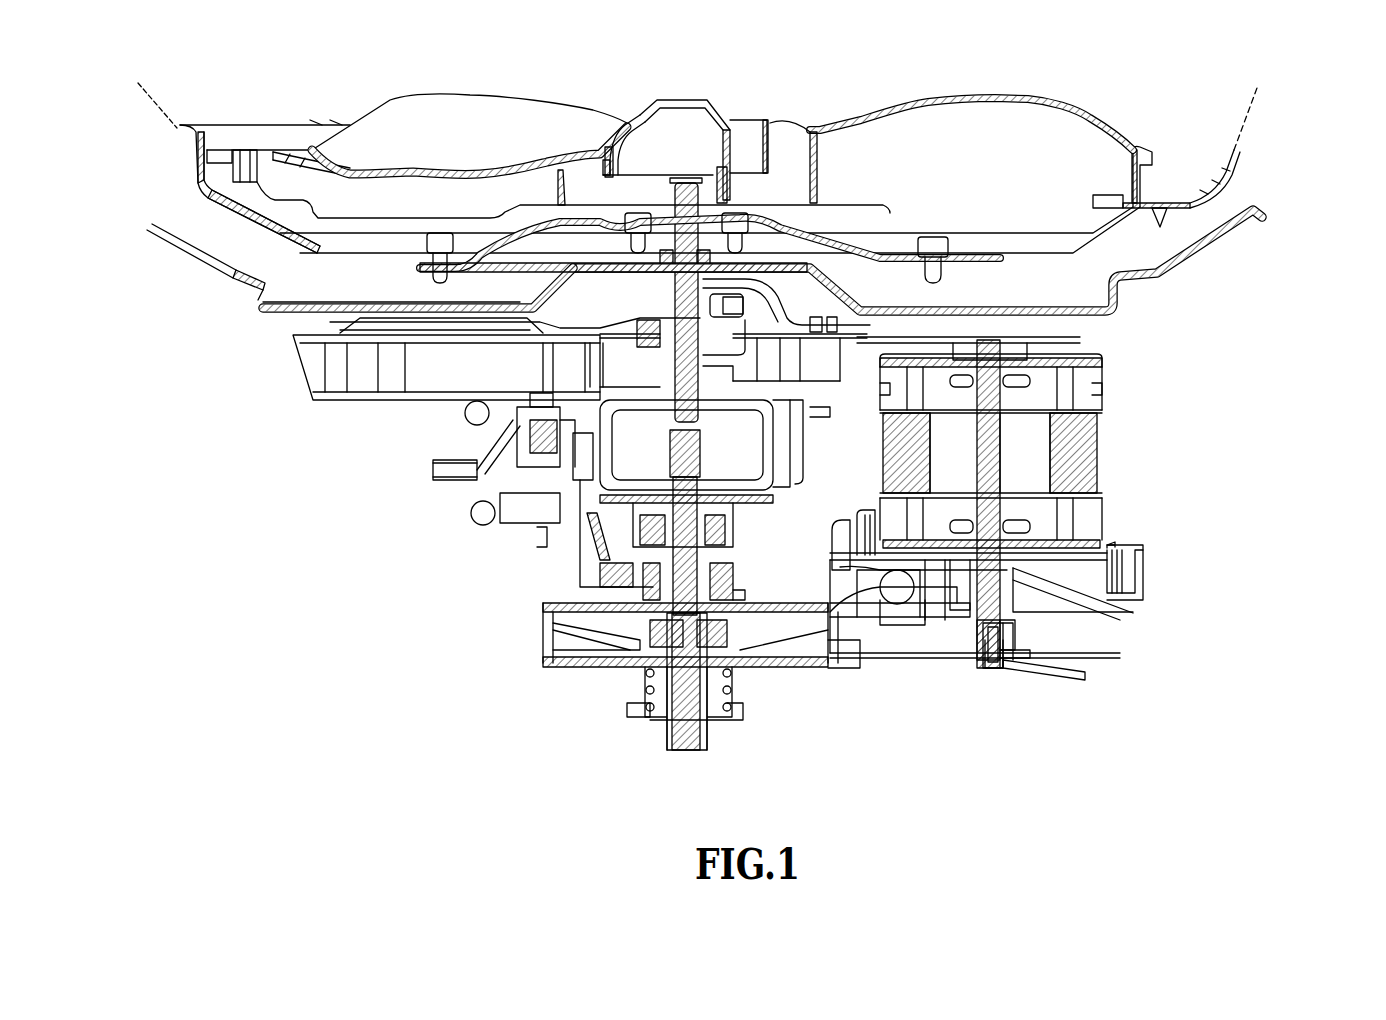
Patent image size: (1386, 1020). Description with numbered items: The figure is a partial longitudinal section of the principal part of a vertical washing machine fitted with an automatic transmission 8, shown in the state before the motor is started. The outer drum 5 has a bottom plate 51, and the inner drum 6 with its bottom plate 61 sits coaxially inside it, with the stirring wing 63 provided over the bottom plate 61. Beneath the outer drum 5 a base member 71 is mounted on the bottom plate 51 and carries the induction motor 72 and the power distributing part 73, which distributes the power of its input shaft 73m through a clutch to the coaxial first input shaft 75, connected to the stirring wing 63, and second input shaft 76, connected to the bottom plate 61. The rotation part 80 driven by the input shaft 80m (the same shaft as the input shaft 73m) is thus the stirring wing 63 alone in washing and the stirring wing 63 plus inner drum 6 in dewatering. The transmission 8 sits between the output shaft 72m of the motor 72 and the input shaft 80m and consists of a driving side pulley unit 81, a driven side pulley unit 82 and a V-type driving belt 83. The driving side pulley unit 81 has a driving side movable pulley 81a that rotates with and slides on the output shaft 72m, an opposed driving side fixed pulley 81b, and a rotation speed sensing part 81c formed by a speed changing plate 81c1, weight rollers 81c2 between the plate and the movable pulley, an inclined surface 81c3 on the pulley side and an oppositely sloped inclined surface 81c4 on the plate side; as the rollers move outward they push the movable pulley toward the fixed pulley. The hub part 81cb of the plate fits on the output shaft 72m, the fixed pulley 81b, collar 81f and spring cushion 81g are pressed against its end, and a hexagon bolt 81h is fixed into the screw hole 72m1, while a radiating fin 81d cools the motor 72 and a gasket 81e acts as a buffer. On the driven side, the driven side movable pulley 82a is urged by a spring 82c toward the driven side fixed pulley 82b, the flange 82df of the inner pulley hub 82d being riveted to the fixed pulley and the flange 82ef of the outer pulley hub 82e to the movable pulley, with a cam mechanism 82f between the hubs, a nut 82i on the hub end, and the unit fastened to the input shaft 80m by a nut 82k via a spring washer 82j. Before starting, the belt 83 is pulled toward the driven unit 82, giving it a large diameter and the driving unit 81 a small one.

The outer drum 5 is at (1242, 238).
The inner drum 6 is at (1268, 108).
The bottom plate 51 is at (275, 318).
The bottom plate 61 is at (350, 253).
The stirring wing 63 is at (1035, 105).
The base member 71 is at (303, 372).
The motor 72 is at (1115, 465).
The output shaft 72m is at (993, 480).
The screw hole 72m1 is at (1020, 628).
The power distributing part 73 is at (440, 513).
The input shaft 73m is at (657, 603).
The first input shaft 75 is at (670, 210).
The second input shaft 76 is at (790, 245).
The transmission 8 is at (1120, 688).
The rotation part 80 is at (365, 432).
The input shaft 80m is at (621, 581).
The driving side pulley unit 81 is at (1120, 647).
The driving side movable pulley 81a is at (1053, 610).
The driving side fixed pulley 81b is at (1057, 673).
The rotation speed sensing part 81c is at (820, 612).
The speed changing plate 81c1 is at (938, 587).
The weight roller 81c2 is at (897, 587).
The inclined surface 81c3 is at (858, 513).
The inclined surface 81c4 is at (837, 560).
The hub part 81cb is at (957, 613).
The radiating fin 81d is at (1143, 545).
The gasket 81e is at (908, 620).
The collar 81f is at (1007, 660).
The spring cushion 81g is at (1013, 663).
The hexagon bolt 81h is at (997, 670).
The driven side pulley unit 82 is at (565, 688).
The driven side movable pulley 82a is at (597, 668).
The driven side fixed pulley 82b is at (600, 625).
The spring 82c is at (630, 690).
The inner pulley hub 82d is at (730, 717).
The flange 82df is at (610, 648).
The outer pulley hub 82e is at (643, 720).
The flange 82ef is at (600, 647).
The cam mechanism 82f is at (697, 690).
The nut 82i is at (657, 750).
The spring washer 82j is at (713, 623).
The nut 82k is at (713, 686).
The V-type driving belt 83 is at (838, 670).